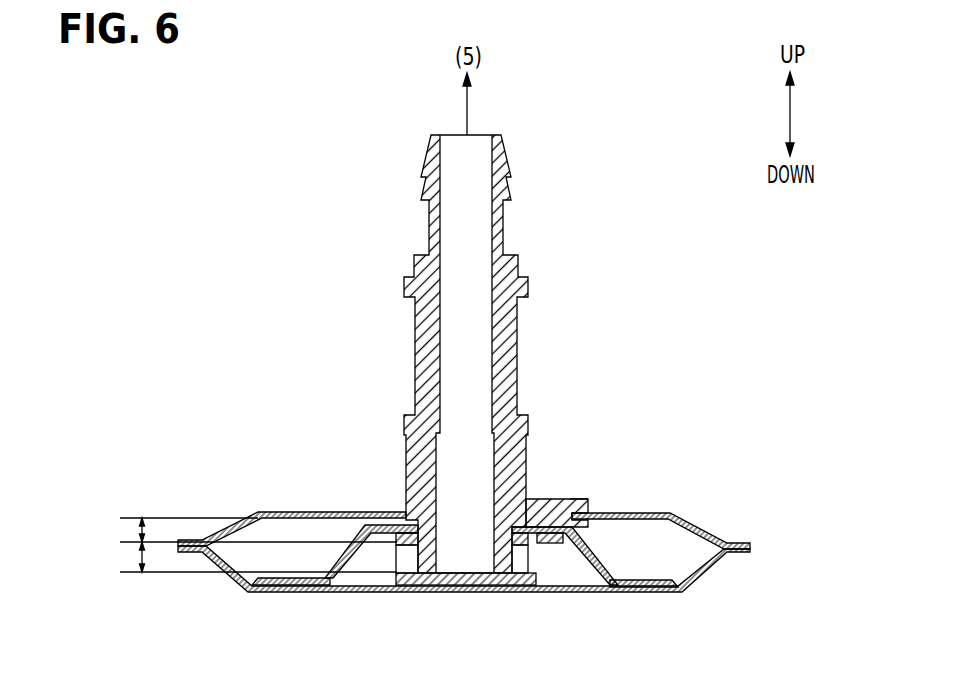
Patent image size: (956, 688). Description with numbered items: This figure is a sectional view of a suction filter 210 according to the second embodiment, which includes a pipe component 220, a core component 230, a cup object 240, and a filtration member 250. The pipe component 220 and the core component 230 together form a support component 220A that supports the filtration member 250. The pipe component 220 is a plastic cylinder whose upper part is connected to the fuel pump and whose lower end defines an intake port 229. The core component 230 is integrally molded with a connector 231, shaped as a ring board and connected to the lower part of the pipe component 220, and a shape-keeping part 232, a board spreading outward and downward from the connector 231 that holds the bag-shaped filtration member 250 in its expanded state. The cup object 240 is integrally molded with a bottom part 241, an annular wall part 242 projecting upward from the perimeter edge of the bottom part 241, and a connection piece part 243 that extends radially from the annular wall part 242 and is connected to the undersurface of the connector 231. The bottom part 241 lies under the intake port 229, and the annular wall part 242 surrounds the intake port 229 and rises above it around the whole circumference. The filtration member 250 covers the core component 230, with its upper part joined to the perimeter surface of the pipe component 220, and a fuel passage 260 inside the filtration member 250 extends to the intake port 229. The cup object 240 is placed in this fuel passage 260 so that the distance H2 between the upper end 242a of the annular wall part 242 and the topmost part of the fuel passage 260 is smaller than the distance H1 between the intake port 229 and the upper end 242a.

The suction filter 210 is at (338, 149).
The pipe component 220 is at (507, 404).
The support component 220A is at (646, 384).
The intake port 229 is at (462, 592).
The core component 230 is at (541, 522).
The connector 231 is at (586, 498).
The shape-keeping part 232 is at (601, 580).
The cup object 240 is at (396, 582).
The bottom part 241 is at (430, 586).
The annular wall part 242 is at (525, 568).
The upper end of the annular wall part 242a is at (398, 532).
The connection piece part 243 is at (558, 545).
The filtration member 250 is at (296, 512).
The fuel passage 260 is at (352, 580).
The distance H1 is at (140, 556).
The distance H2 is at (140, 532).